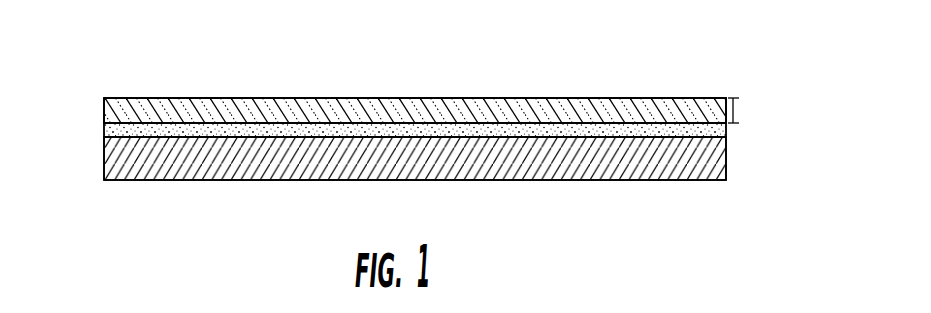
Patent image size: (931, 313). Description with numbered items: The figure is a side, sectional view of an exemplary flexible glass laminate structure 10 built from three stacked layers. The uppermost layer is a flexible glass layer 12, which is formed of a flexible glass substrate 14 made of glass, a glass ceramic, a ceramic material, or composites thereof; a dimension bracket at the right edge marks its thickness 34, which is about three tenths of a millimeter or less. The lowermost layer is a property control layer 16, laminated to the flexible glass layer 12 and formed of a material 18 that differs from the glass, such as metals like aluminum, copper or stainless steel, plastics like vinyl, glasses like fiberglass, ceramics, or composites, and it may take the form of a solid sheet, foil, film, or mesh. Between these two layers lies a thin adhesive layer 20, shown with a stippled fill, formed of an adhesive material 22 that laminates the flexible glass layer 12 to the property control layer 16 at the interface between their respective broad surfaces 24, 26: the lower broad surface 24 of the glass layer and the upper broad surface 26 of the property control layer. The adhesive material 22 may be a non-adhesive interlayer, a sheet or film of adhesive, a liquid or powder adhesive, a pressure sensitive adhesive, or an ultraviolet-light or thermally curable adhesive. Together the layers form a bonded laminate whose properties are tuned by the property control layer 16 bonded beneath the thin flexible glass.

The flexible glass laminate structure 10 is at (780, 90).
The flexible glass layer 12 is at (98, 110).
The flexible glass substrate 14 is at (440, 120).
The property control layer 16 is at (98, 158).
The material 18 is at (626, 162).
The adhesive layer 20 is at (741, 132).
The adhesive material 22 is at (617, 120).
The broad surface 24 is at (312, 122).
The broad surface 26 is at (319, 138).
The thickness 34 is at (740, 110).